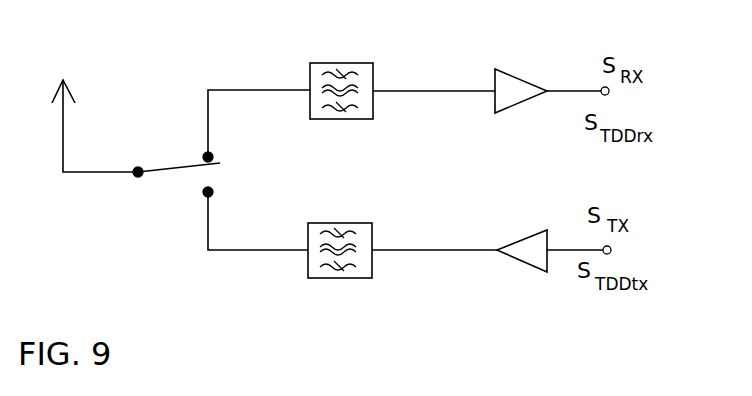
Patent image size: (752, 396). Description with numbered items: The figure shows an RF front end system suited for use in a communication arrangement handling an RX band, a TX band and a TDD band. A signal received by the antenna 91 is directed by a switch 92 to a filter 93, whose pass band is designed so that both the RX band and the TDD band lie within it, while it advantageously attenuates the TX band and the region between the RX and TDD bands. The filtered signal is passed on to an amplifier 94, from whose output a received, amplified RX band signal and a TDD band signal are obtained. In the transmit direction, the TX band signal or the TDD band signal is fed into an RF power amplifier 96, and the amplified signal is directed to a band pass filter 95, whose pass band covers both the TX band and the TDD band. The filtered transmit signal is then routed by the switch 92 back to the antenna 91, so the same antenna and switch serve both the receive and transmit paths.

The antenna 91 is at (80, 92).
The switch 92 is at (182, 163).
The filter 93 is at (340, 119).
The amplifier 94 is at (520, 75).
The band pass filter 95 is at (338, 223).
The RF power amplifier 96 is at (525, 230).